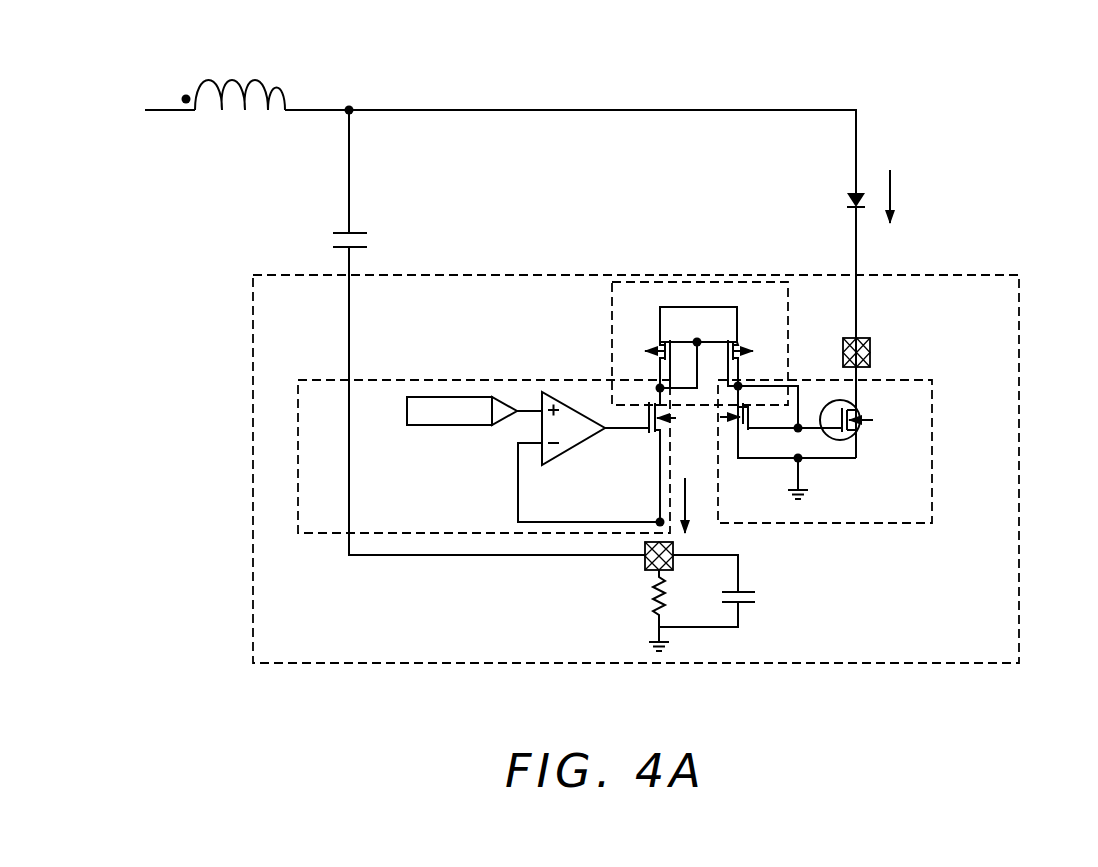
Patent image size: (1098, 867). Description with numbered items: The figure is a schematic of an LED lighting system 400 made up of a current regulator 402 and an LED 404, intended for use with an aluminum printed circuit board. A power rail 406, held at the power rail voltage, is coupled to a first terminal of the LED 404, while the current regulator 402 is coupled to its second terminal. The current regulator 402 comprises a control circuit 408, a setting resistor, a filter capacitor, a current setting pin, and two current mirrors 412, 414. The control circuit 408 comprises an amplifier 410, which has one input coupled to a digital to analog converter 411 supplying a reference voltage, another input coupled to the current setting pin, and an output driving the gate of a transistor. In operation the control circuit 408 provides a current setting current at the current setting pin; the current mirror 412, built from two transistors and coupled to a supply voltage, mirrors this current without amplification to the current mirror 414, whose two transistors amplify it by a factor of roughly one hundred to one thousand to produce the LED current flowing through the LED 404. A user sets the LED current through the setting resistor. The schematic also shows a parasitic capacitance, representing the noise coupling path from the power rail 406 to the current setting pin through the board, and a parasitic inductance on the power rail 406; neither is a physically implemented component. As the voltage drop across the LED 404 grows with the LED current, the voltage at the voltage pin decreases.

The LED lighting system 400 is at (297, 747).
The current regulator 402 is at (253, 423).
The LED 404 is at (848, 196).
The power rail 406 is at (465, 110).
The control circuit 408 is at (318, 533).
The amplifier 410 is at (577, 410).
The digital to analog converter 411 is at (433, 426).
The current mirror 412 is at (800, 223).
The current mirror 414 is at (799, 298).